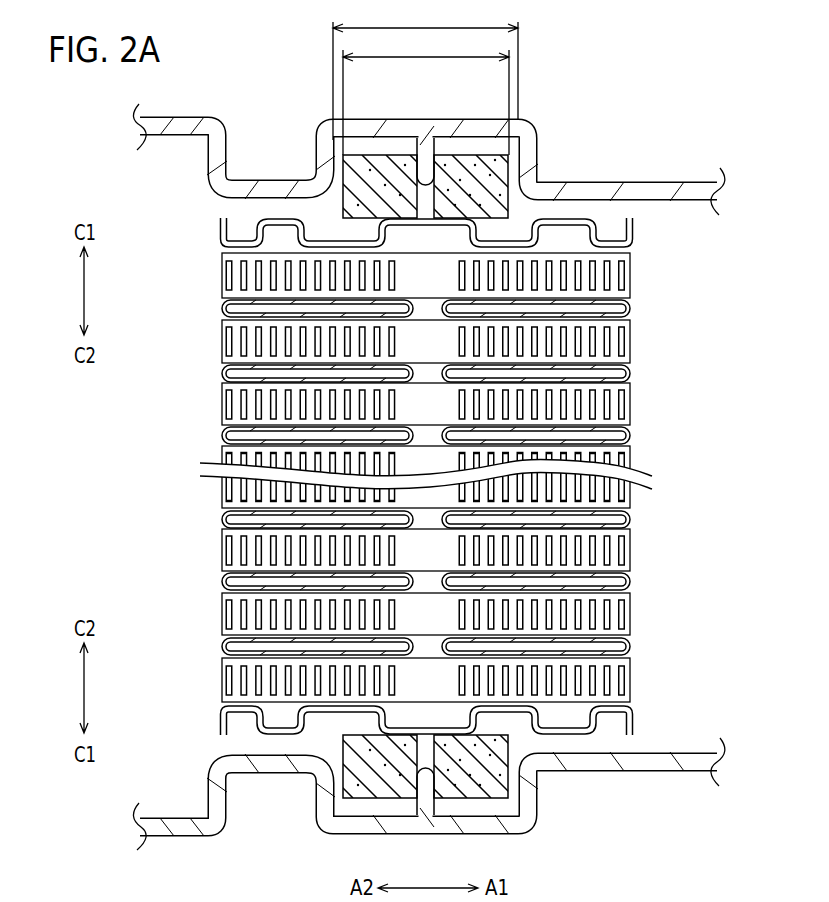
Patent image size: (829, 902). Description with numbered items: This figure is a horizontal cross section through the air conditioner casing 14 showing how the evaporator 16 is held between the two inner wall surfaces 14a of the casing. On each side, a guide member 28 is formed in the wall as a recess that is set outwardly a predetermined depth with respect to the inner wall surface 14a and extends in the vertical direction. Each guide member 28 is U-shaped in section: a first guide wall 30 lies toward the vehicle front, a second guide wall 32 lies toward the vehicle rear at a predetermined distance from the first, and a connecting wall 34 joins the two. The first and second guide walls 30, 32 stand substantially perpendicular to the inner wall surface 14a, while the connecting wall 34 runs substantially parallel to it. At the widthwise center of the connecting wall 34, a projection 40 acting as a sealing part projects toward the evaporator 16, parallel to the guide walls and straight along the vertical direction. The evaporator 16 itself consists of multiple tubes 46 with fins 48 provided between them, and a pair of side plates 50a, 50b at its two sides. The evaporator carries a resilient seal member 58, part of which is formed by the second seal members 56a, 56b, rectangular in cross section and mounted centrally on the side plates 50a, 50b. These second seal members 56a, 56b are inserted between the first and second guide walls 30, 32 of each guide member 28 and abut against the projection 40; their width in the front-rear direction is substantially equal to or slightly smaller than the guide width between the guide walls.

The air conditioner casing 14 is at (649, 169).
The inner wall surfaces 14a is at (692, 203).
The evaporator 16 is at (445, 477).
The guide member 28 is at (442, 436).
The first guide wall 30 is at (524, 155).
The second guide wall 32 is at (327, 156).
The connecting wall 34 is at (466, 128).
The projection 40 is at (424, 172).
The tube 46 is at (230, 372).
The fin 48 is at (608, 404).
The side plate 50a is at (636, 223).
The side plate 50b is at (634, 720).
The second seal member 56a is at (369, 167).
The second seal member 56b is at (364, 787).
The seal member 58 is at (503, 148).